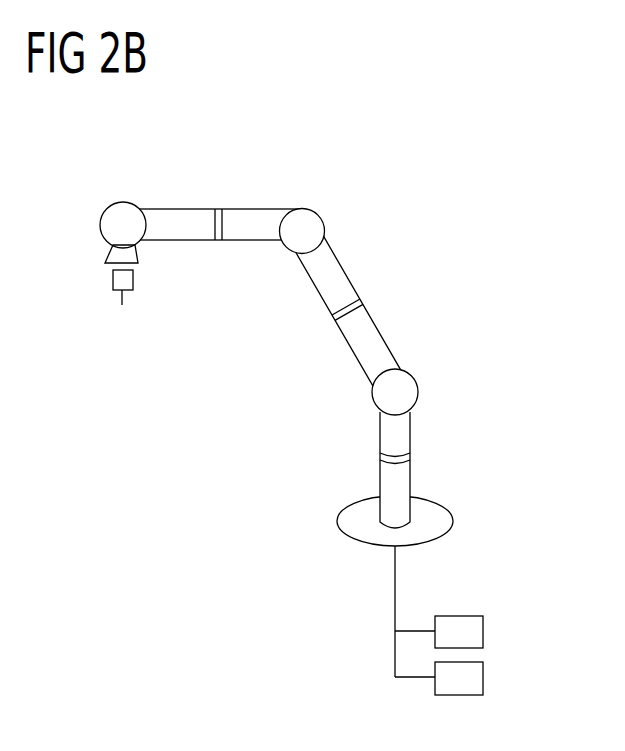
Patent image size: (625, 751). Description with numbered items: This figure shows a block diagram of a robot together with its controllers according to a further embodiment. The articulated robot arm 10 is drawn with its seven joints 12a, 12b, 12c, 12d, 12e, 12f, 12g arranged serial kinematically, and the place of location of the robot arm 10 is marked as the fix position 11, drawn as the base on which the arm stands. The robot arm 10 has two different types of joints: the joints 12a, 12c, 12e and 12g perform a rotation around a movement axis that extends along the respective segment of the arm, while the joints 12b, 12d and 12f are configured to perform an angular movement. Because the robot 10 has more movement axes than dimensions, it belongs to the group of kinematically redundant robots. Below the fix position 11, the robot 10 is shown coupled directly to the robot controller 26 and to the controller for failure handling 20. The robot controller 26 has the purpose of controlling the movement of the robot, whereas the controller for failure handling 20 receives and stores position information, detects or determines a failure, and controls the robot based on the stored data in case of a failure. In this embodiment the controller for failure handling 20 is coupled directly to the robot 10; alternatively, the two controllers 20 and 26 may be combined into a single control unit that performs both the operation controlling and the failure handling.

The articulated robot arm 10 is at (267, 156).
The fix position 11 is at (445, 522).
The joint 12a is at (408, 462).
The joint 12b is at (408, 390).
The joint 12c is at (360, 304).
The joint 12d is at (317, 225).
The joint 12e is at (217, 242).
The joint 12f is at (123, 212).
The joint 12g is at (104, 268).
The controller for failure handling 20 is at (483, 632).
The robot controller 26 is at (483, 678).